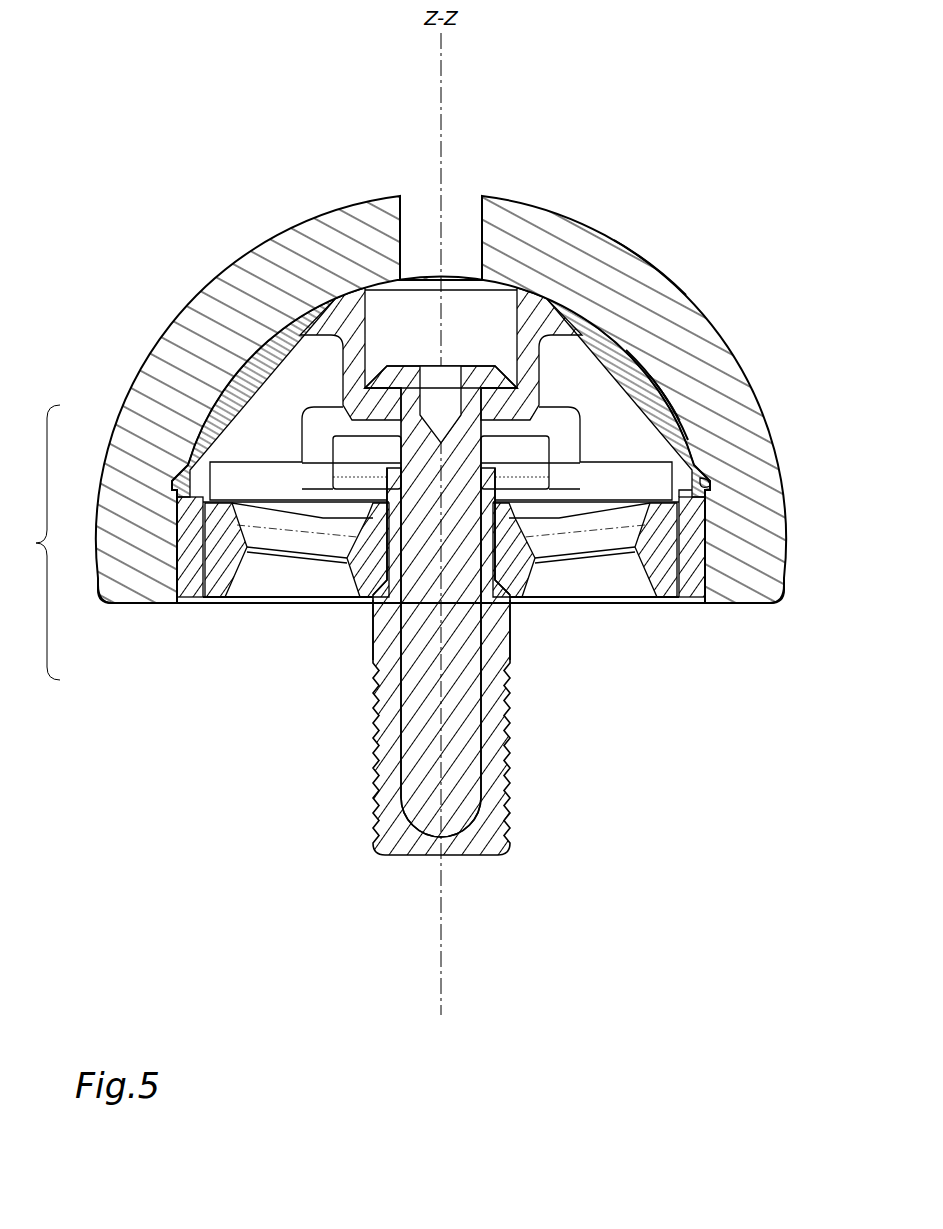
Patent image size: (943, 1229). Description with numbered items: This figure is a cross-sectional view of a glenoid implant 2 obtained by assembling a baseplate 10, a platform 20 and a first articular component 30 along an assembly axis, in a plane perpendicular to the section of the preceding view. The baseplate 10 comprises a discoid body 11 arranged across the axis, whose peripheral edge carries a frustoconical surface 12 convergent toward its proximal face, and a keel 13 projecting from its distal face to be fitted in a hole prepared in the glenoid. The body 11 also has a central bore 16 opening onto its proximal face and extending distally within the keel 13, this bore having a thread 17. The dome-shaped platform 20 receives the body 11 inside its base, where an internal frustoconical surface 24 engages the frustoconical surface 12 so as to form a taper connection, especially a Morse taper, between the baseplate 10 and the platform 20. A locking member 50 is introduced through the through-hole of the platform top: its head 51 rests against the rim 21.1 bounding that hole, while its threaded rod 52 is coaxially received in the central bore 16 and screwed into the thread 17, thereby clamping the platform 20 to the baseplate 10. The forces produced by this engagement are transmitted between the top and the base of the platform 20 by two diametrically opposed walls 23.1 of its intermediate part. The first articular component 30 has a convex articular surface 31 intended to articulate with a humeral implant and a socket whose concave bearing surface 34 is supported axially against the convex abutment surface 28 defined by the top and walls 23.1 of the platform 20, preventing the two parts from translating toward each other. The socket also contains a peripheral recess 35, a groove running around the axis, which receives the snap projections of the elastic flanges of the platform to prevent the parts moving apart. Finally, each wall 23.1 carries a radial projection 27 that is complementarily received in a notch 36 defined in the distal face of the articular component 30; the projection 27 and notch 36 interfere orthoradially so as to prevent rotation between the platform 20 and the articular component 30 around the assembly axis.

The glenoid implant 2 is at (38, 542).
The baseplate 10 is at (192, 586).
The body 11 is at (210, 600).
The frustoconical surface 12 is at (742, 604).
The keel 13 is at (378, 848).
The central bore 16 is at (507, 493).
The thread 17 is at (462, 563).
The platform 20 is at (166, 557).
The rim 21.1 is at (505, 432).
The wall 23.1 is at (220, 428).
The frustoconical surface 24 is at (668, 585).
The projection 27 is at (722, 498).
The convex abutment surface 28 is at (674, 438).
The first articular component 30 is at (126, 380).
The convex articular surface 31 is at (597, 222).
The concave bearing surface 34 is at (690, 412).
The recess 35 is at (710, 482).
The notch 36 is at (692, 558).
The locking member 50 is at (390, 452).
The head 51 is at (485, 366).
The threaded rod 52 is at (430, 603).